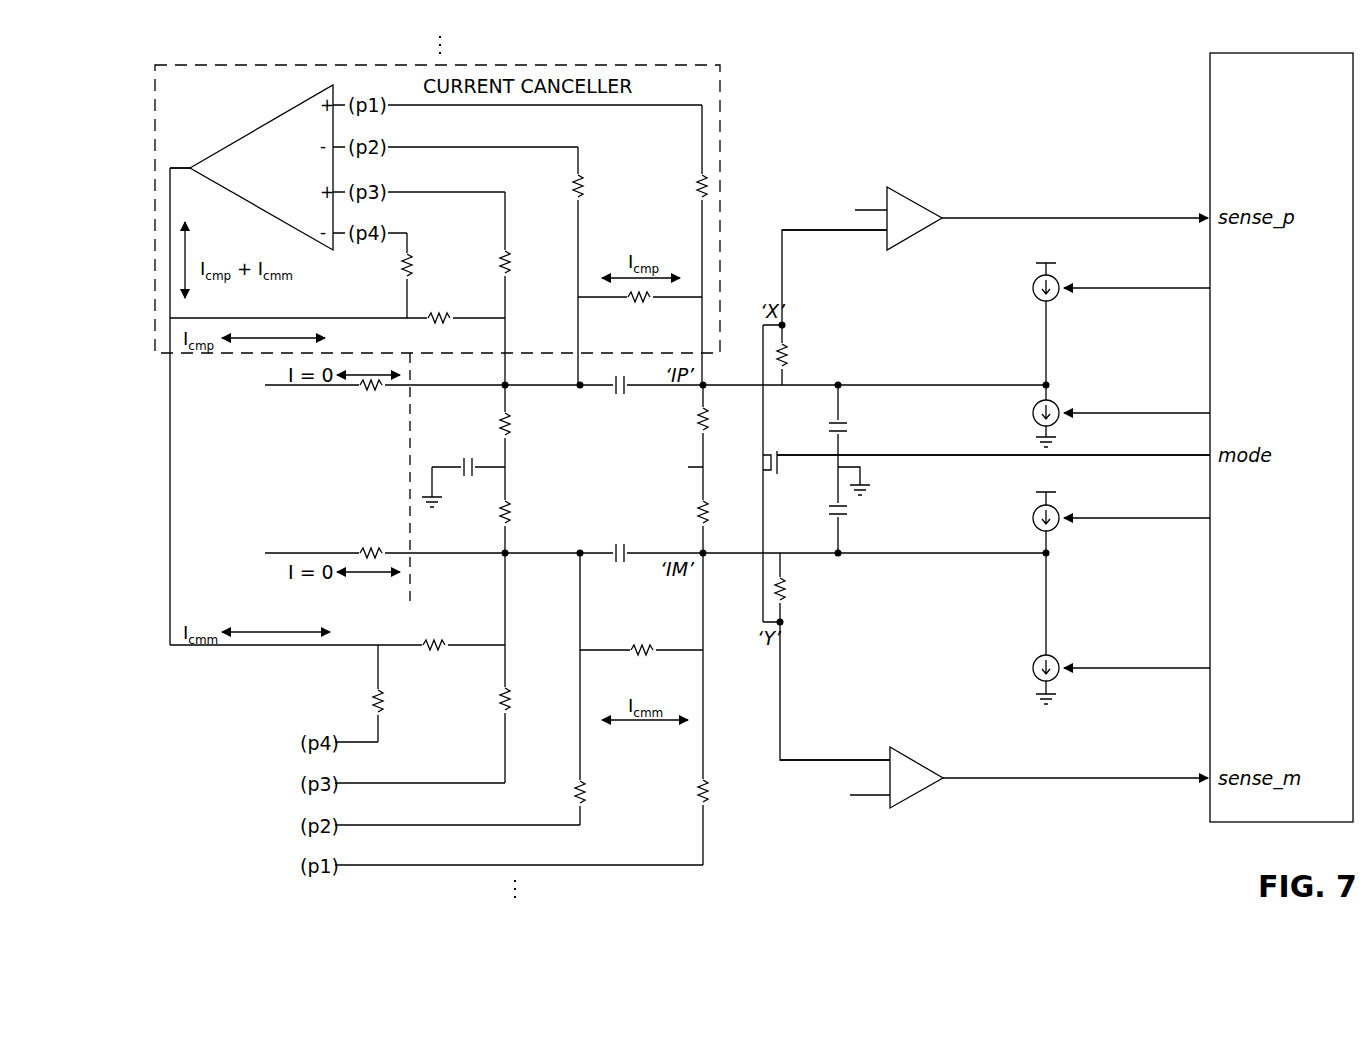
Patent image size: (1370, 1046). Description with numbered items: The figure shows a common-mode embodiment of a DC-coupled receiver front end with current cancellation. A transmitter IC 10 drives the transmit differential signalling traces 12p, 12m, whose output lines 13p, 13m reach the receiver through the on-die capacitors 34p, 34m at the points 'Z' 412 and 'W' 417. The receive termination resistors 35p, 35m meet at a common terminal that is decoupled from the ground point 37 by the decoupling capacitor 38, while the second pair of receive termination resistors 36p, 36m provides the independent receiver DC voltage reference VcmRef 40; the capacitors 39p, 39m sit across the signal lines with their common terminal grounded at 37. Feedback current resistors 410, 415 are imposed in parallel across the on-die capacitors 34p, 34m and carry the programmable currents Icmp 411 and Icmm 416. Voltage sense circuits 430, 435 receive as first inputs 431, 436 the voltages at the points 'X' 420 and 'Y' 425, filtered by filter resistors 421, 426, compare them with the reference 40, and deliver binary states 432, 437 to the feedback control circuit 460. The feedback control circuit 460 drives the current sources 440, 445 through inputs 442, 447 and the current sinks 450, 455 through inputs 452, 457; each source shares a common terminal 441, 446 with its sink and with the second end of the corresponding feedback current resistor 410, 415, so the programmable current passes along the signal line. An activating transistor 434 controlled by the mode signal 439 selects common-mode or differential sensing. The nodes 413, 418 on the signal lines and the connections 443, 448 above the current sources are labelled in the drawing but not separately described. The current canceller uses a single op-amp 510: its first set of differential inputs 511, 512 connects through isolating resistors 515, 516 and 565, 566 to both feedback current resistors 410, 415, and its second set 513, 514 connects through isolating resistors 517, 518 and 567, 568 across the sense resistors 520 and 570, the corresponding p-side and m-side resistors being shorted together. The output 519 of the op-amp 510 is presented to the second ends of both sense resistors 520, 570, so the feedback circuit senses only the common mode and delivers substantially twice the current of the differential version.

The transmitter IC 10 is at (261, 476).
The transmit differential signalling trace Txp 12p is at (378, 390).
The transmit differential signalling trace 12m is at (378, 550).
The transmitter output line 13p is at (340, 390).
The transmitter output line 13m is at (300, 555).
The on-die capacitor 34p is at (620, 370).
The on-die capacitor 34m is at (622, 572).
The receive termination resistor R1p 35p is at (510, 430).
The receive termination resistor R1m 35m is at (510, 515).
The receive termination resistor R2p 36p is at (698, 420).
The receive termination resistor R2m 36m is at (698, 515).
The ground point GND 37 is at (436, 503).
The decoupling capacitor Ccm 38 is at (468, 455).
The capacitor C2p 39p is at (845, 420).
The capacitor C2m 39m is at (848, 515).
The receiver DC voltage reference VcmRef 40 is at (690, 470).
The feedback current resistor Rfp 410 is at (640, 300).
The programmable current Icmp 411 is at (645, 255).
The point 'Z' 412 is at (576, 390).
The IP line 413 is at (710, 385).
The feedback current resistor Rfm 415 is at (638, 655).
The programmable current Icmm 416 is at (935, 555).
The point 'W' 417 is at (576, 558).
The IM line 418 is at (710, 556).
The point 'X' 420 is at (790, 325).
The filter resistor 421 is at (790, 356).
The point 'Y' 425 is at (785, 625).
The filter resistor 426 is at (785, 597).
The voltage sense circuit 430 is at (905, 195).
The first input 431 is at (785, 240).
The binary state output 432 is at (1005, 218).
The activating transistor Q1 434 is at (768, 465).
The voltage sense circuit 435 is at (905, 752).
The first input 436 is at (792, 760).
The binary state output 437 is at (990, 780).
The mode signal 439 is at (1130, 453).
The current source 440 is at (1035, 295).
The common terminal 441 is at (1052, 385).
The input Ip_a 442 is at (1130, 288).
The supply connection 443 is at (1050, 262).
The current source 445 is at (1035, 513).
The common terminal 446 is at (1052, 558).
The input Im_b 447 is at (1185, 515).
The supply connection 448 is at (1050, 492).
The current sink 450 is at (1035, 420).
The input Im_a 452 is at (1130, 413).
The current sink 455 is at (1035, 662).
The input Im_b 457 is at (1185, 665).
The feedback control circuit 460 is at (1281, 437).
The op-amp 510 is at (261, 167).
The differential input 511 is at (585, 120).
The differential input 512 is at (440, 147).
The differential input 513 is at (405, 192).
The differential input 514 is at (407, 233).
The isolating resistor Rsfp 515 is at (706, 190).
The isolating resistor Rsfp 516 is at (585, 187).
The isolating resistor 517 is at (508, 265).
The isolating resistor 518 is at (410, 268).
The op-amp output 519 is at (190, 165).
The sense resistor Rnp 520 is at (460, 316).
The isolating resistor 565 is at (700, 805).
The isolating resistor 566 is at (582, 790).
The isolating resistor 567 is at (508, 695).
The isolating resistor 568 is at (374, 708).
The sense resistor 570 is at (433, 650).